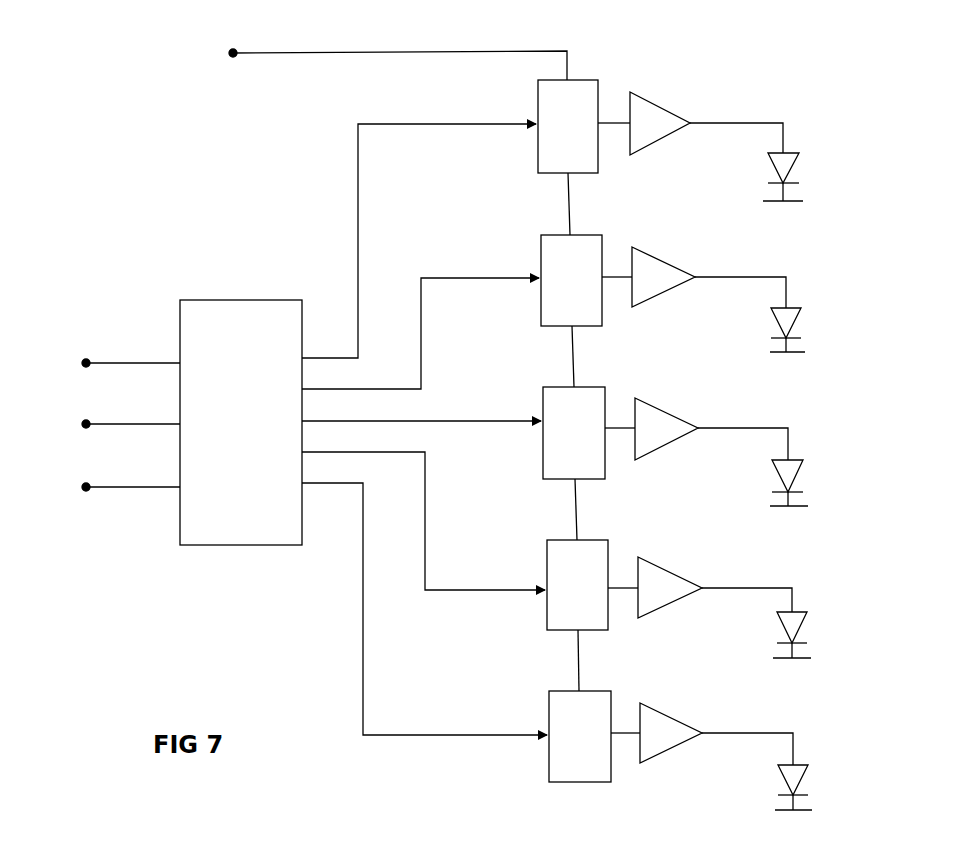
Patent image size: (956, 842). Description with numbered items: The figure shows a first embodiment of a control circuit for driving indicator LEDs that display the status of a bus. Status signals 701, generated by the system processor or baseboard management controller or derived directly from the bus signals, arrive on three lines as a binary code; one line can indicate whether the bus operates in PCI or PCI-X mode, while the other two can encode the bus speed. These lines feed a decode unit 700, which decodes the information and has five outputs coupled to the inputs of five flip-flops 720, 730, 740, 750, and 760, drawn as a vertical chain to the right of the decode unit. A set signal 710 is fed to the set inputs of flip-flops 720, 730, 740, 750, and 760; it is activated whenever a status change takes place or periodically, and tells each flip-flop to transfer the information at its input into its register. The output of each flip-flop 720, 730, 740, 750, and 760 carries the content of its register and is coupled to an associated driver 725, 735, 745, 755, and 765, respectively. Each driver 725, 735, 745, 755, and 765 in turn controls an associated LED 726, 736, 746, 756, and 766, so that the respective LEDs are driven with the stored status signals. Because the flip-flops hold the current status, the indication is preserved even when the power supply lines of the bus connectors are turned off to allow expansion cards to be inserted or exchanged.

The decode unit 700 is at (228, 297).
The status signals 701 is at (66, 404).
The set signal 710 is at (233, 58).
The flip-flop 720 is at (577, 80).
The driver 725 is at (660, 103).
The LED 726 is at (795, 170).
The flip-flop 730 is at (588, 235).
The driver 735 is at (665, 262).
The LED 736 is at (792, 321).
The flip-flop 740 is at (585, 387).
The driver 745 is at (678, 412).
The LED 746 is at (800, 476).
The flip-flop 750 is at (588, 540).
The driver 755 is at (678, 568).
The LED 756 is at (805, 627).
The flip-flop 760 is at (600, 690).
The driver 765 is at (680, 720).
The LED 766 is at (805, 779).